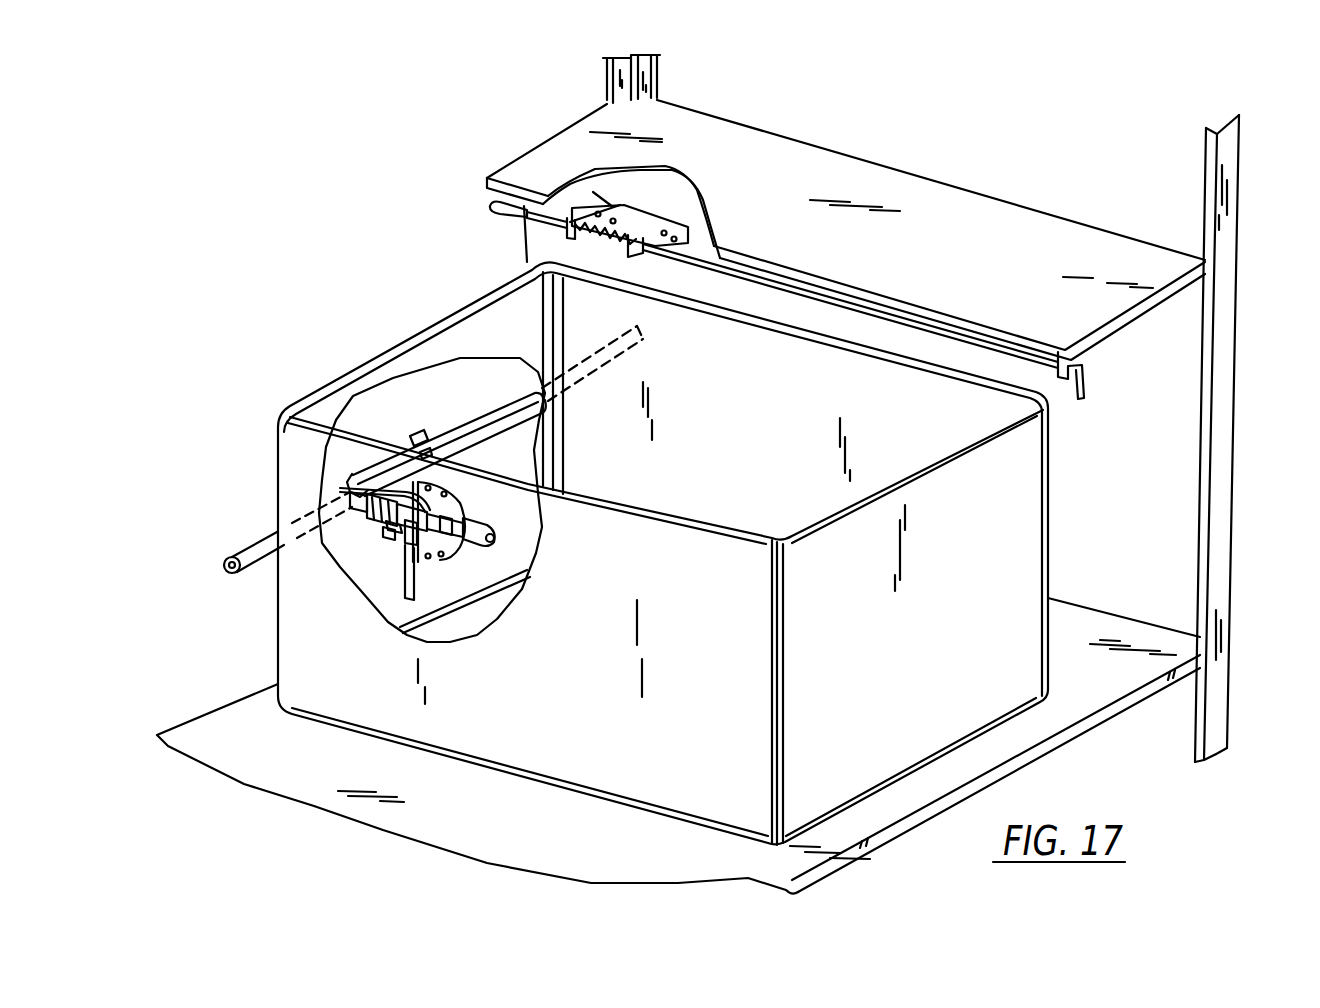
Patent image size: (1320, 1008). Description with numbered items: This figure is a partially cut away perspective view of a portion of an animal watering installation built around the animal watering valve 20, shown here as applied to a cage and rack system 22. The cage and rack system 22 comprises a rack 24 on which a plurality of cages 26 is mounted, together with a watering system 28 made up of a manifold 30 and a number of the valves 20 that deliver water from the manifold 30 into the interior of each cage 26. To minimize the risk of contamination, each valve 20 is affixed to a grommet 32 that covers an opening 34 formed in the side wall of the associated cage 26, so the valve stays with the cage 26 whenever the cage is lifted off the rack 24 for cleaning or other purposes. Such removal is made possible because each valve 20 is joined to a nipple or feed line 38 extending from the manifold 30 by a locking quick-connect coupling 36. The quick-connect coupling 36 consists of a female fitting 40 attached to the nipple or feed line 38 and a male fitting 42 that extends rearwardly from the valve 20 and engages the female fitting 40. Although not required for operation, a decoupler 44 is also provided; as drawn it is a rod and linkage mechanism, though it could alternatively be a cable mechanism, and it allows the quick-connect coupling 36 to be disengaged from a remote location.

The animal watering valve 20 is at (497, 532).
The cage and rack system 22 is at (1043, 120).
The rack 24 is at (1230, 437).
The cage 26 is at (1046, 478).
The watering system 28 is at (439, 414).
The manifold 30 is at (250, 548).
The grommet 32 is at (449, 497).
The opening 34 is at (405, 553).
The locking quick-connect coupling 36 is at (393, 527).
The nipple or feed line 38 is at (340, 488).
The female fitting 40 is at (372, 537).
The male fitting 42 is at (407, 524).
The decoupler 44 is at (495, 203).